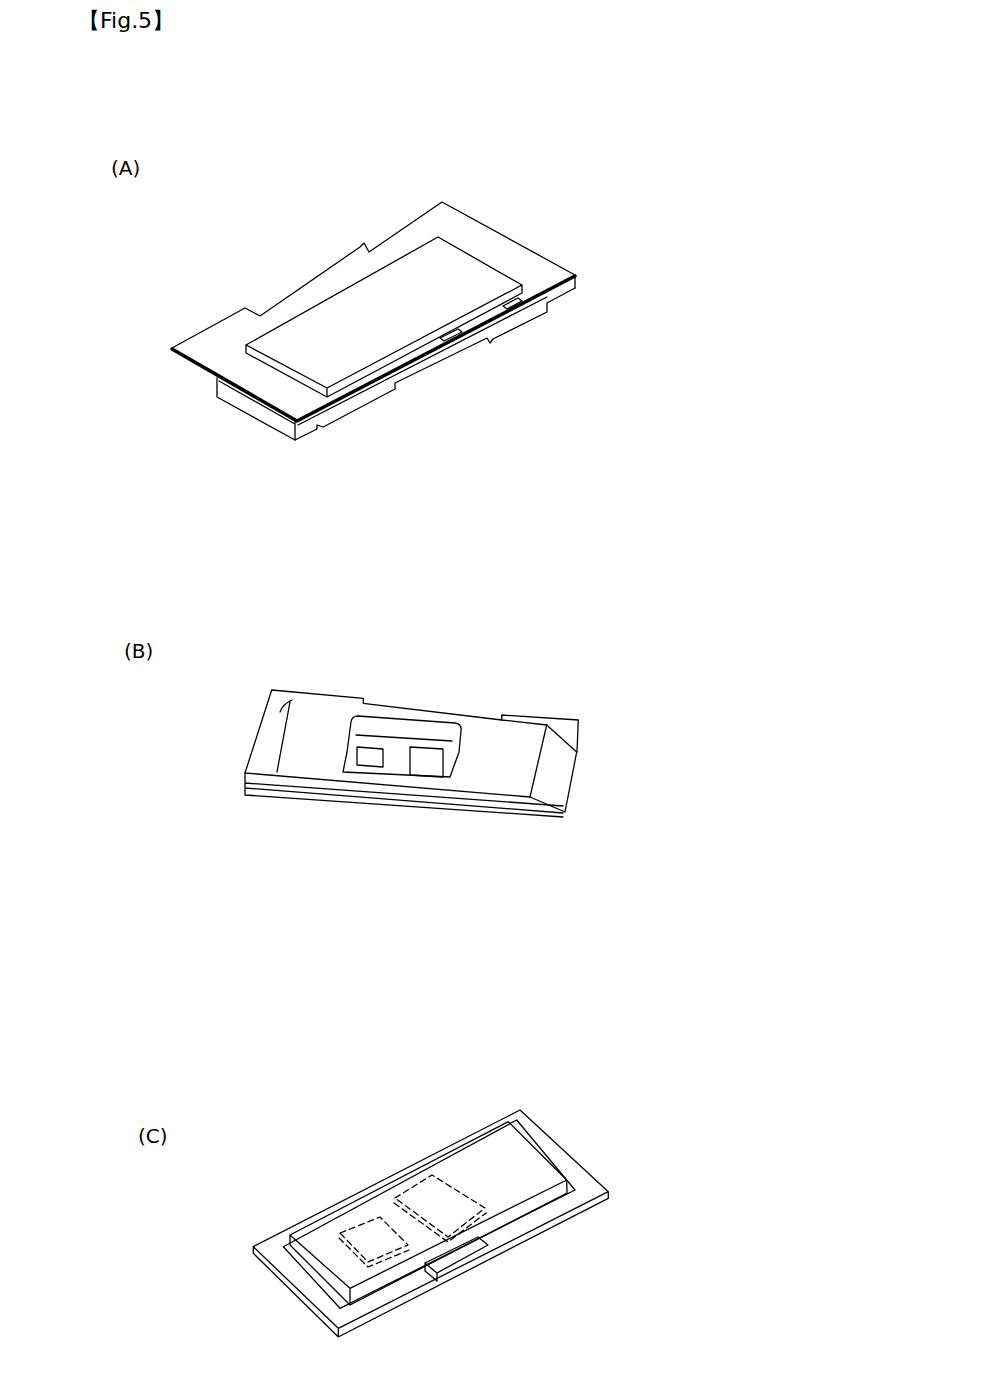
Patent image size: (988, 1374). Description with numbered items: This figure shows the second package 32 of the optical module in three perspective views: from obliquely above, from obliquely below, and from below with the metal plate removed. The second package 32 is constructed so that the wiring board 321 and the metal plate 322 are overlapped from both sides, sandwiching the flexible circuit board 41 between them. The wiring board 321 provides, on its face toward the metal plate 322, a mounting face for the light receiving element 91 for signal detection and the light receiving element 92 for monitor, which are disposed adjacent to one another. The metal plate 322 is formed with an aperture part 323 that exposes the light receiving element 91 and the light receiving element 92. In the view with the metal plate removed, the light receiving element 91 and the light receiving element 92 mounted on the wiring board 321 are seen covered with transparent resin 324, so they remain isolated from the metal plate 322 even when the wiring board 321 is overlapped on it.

The second package 32 is at (533, 218).
The flexible circuit board 41 is at (227, 357).
The wiring board 321 is at (353, 330).
The metal plate 322 is at (507, 326).
The aperture part 323 is at (422, 720).
The transparent resin 324 is at (521, 1143).
The light receiving element for signal detection 91 is at (428, 758).
The light receiving element for monitor 92 is at (365, 758).